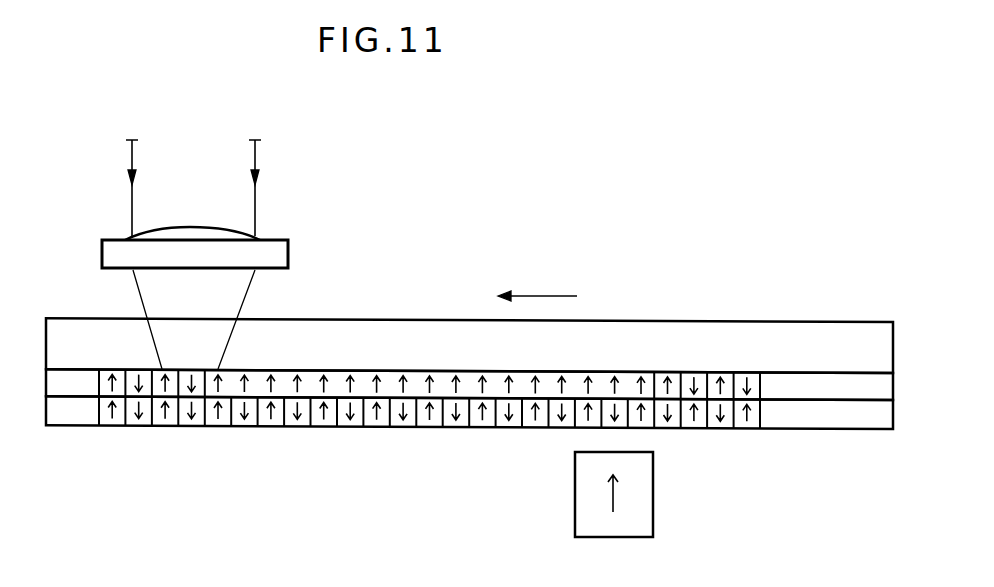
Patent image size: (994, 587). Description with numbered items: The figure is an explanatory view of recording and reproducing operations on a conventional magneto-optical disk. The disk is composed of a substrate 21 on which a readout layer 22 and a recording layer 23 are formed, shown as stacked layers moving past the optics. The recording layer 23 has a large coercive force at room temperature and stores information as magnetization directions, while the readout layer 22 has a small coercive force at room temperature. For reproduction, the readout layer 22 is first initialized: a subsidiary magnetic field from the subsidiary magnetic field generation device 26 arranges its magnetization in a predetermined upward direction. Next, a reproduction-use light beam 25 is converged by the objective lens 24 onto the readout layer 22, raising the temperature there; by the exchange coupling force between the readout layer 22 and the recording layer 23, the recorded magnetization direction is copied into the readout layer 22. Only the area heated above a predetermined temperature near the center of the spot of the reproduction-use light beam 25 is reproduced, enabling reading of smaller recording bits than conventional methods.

The substrate 21 is at (885, 342).
The readout layer 22 is at (890, 388).
The recording layer 23 is at (888, 418).
The objective lens 24 is at (289, 250).
The reproduction-use light beam 25 is at (256, 204).
The subsidiary magnetic field generation device 26 is at (575, 488).